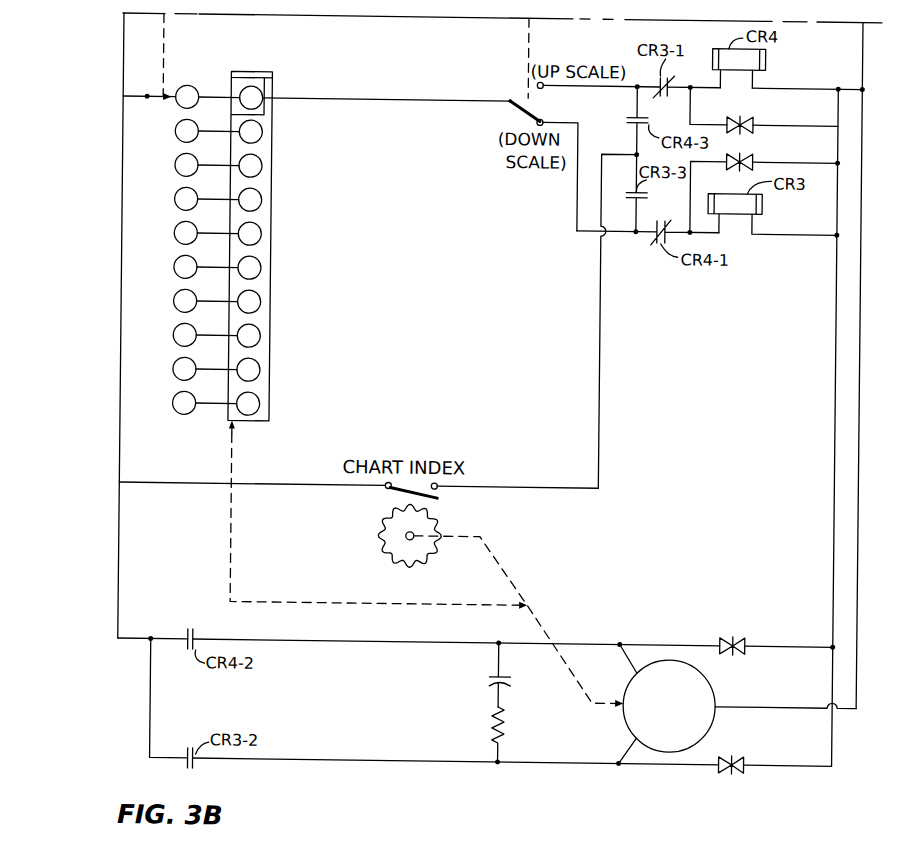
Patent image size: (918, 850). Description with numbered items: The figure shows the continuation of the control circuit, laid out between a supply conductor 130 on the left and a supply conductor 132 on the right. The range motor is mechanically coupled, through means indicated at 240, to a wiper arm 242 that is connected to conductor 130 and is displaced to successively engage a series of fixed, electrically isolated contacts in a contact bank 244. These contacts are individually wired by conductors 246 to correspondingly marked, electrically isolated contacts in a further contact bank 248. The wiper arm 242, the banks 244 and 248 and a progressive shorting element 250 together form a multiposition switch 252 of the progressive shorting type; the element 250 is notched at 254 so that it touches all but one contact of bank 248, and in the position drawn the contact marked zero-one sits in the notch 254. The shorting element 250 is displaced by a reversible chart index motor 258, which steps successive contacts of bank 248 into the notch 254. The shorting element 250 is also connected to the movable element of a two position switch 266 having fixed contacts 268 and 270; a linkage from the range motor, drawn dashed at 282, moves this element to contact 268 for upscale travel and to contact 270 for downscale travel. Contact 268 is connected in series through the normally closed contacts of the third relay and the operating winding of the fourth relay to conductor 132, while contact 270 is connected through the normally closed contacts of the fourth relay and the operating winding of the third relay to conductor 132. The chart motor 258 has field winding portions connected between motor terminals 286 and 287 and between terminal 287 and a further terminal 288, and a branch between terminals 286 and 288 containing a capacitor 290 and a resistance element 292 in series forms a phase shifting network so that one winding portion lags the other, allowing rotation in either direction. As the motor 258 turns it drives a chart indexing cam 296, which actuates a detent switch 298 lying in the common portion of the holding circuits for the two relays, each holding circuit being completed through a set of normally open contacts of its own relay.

The conductor 130 is at (123, 171).
The conductor 132 is at (862, 38).
The mechanical coupling means 240 is at (164, 44).
The wiper arm 242 is at (148, 99).
The contact bank 244 is at (199, 83).
The conductors 246 is at (209, 142).
The contact bank 248 is at (266, 84).
The progressive shorting element 250 is at (273, 350).
The multiposition switch 252 is at (279, 388).
The notch 254 is at (257, 70).
The chart index motor 258 is at (724, 679).
The two position switch 266 is at (514, 90).
The fixed contact 268 is at (546, 86).
The fixed contact 270 is at (529, 111).
The mechanical linkage (dashed) 282 is at (528, 38).
The motor terminal 286 is at (640, 672).
The motor terminal 287 is at (724, 701).
The motor terminal 288 is at (640, 727).
The capacitor 290 is at (495, 676).
The resistance element 292 is at (504, 715).
The chart indexing cam 296 is at (446, 516).
The detent switch 298 is at (406, 489).